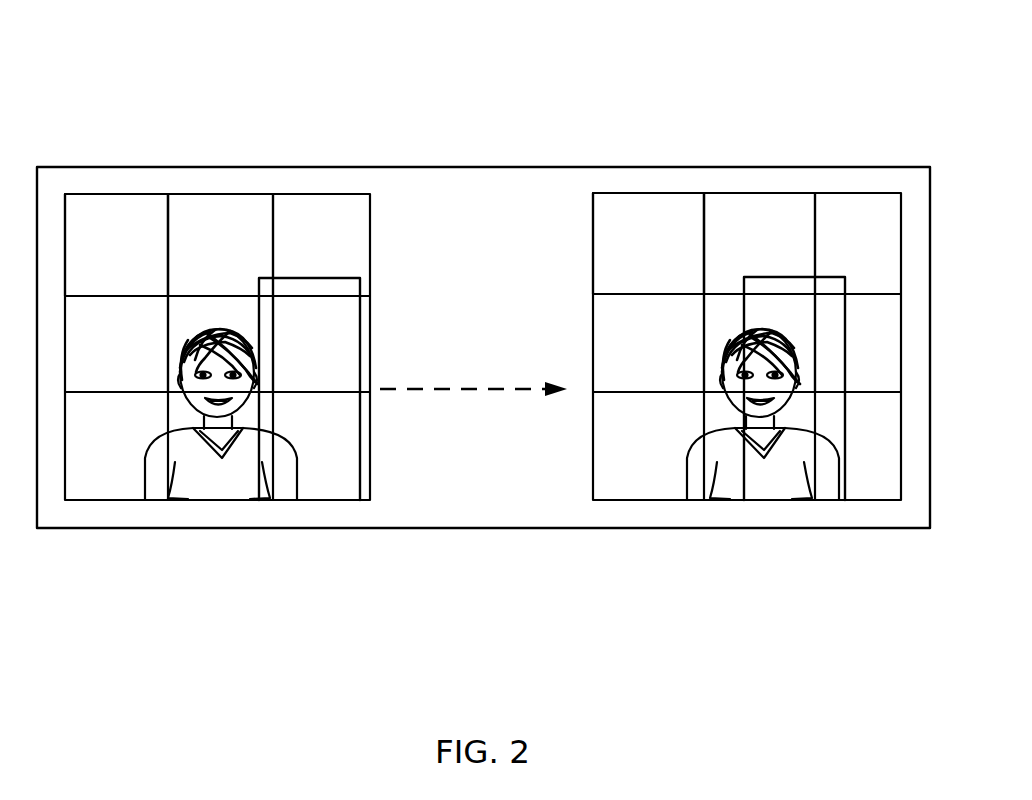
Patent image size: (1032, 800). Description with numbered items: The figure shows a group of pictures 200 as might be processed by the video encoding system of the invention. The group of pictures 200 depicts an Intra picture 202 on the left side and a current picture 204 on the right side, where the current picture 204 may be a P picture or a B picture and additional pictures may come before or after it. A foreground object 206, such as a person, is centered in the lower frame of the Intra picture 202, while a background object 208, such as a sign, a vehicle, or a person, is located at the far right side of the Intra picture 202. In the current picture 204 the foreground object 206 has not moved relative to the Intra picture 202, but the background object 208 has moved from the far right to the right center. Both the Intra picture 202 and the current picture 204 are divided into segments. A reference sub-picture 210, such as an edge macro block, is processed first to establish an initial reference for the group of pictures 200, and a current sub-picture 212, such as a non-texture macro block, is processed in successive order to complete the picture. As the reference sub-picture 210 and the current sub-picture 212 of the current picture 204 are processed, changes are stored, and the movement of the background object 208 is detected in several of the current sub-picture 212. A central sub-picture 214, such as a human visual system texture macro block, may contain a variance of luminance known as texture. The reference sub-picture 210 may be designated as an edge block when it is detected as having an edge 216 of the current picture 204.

The group of pictures 200 is at (186, 60).
The Intra picture 202 is at (61, 543).
The current picture 204 is at (903, 543).
The foreground object 206 is at (725, 457).
The background object 208 is at (333, 347).
The reference sub-picture 210 is at (128, 252).
The current sub-picture 212 is at (237, 252).
The central sub-picture 214 is at (235, 322).
The edge 216 is at (582, 262).